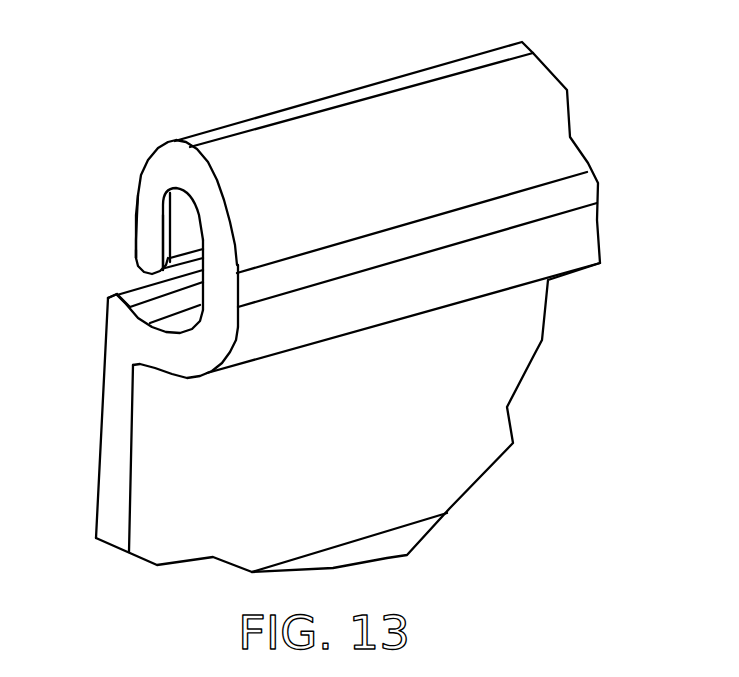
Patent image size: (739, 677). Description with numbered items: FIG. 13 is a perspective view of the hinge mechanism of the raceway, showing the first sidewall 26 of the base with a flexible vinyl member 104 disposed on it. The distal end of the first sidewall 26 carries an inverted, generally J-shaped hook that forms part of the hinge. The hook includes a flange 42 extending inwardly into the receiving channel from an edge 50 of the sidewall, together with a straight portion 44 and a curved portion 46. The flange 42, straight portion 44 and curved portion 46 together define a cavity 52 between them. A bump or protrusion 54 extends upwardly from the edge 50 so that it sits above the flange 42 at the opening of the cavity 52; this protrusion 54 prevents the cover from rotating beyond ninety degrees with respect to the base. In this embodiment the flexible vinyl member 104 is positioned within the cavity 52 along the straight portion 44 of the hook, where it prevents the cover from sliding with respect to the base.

The first sidewall 26 is at (117, 438).
The flange 42 is at (177, 357).
The straight portion 44 is at (147, 232).
The curved portion 46 is at (222, 308).
The edge 50 is at (113, 310).
The cavity 52 is at (192, 229).
The protrusion 54 is at (108, 299).
The flexible vinyl member 104 is at (165, 203).